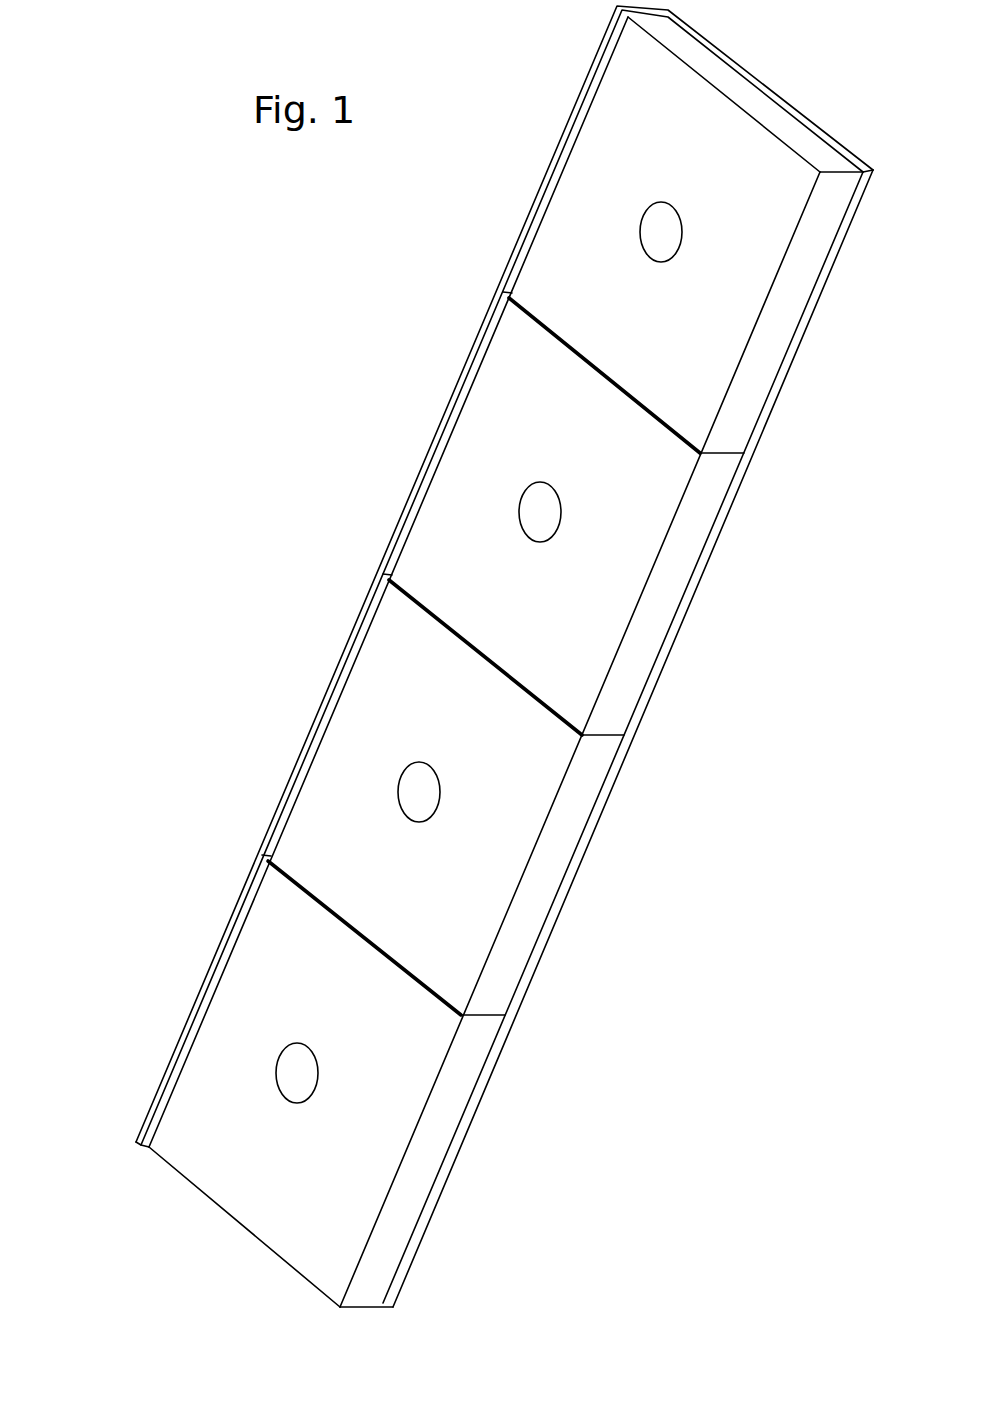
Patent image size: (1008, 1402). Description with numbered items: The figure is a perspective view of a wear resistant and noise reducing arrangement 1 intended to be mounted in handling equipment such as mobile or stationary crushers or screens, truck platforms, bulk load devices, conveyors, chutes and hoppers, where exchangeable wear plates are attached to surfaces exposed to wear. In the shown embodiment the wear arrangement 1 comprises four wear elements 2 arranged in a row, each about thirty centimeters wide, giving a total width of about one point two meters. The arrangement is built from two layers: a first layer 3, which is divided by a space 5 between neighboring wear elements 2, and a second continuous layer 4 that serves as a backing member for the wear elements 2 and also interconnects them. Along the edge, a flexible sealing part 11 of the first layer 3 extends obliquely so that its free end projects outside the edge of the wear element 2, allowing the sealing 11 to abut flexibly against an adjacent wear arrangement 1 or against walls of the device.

The wear resistant and noise reducing arrangement 1 is at (462, 656).
The wear element 2 is at (586, 227).
The first layer 3 is at (625, 738).
The second continuous layer 4 is at (473, 1103).
The space 5 is at (725, 457).
The flexible sealing part 11 is at (606, 34).